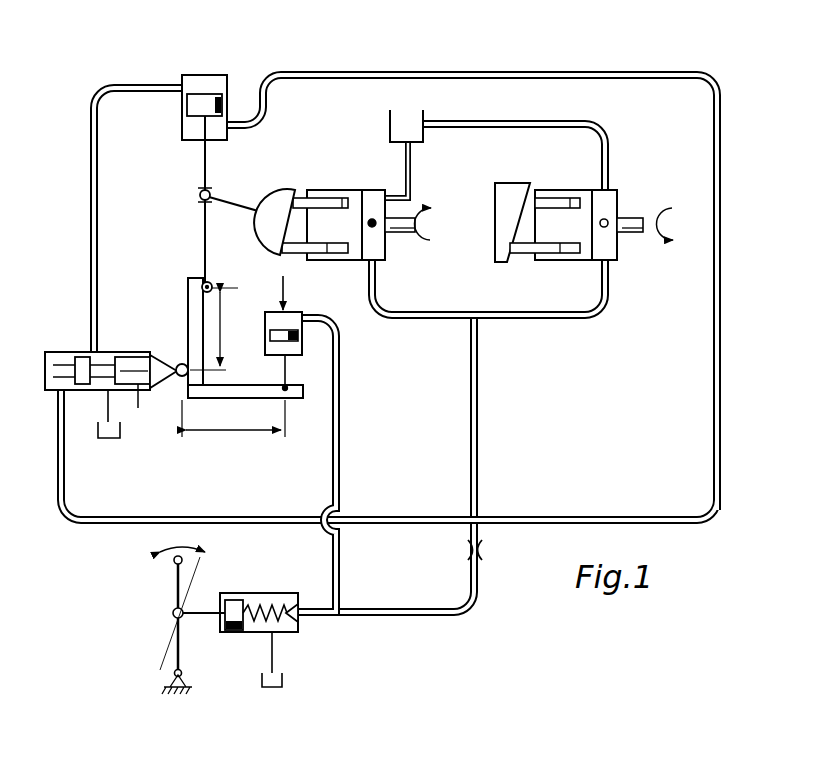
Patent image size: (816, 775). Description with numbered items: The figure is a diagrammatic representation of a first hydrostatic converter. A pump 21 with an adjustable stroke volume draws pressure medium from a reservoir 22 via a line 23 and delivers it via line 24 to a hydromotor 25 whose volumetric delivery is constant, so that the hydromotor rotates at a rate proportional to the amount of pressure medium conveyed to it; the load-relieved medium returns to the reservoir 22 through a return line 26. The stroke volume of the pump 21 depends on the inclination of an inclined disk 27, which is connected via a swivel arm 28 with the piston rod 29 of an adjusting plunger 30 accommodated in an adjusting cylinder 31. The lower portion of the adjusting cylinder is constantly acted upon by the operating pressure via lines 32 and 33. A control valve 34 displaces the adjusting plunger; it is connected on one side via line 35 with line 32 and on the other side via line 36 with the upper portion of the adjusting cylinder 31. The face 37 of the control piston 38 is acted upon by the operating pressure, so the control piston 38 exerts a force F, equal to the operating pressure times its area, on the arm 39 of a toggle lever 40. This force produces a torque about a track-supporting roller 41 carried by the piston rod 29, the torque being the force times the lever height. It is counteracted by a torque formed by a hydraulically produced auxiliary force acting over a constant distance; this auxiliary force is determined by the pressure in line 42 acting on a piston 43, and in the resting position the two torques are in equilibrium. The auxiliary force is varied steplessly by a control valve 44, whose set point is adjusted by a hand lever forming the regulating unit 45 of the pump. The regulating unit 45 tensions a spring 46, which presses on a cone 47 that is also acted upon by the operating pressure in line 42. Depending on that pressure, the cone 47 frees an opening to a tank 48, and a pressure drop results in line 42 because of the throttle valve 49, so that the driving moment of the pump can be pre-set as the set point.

The pump 21 is at (328, 190).
The reservoir 22 is at (418, 118).
The line 23 is at (412, 178).
The line 24 is at (385, 306).
The hydromotor 25 is at (553, 262).
The return line 26 is at (598, 128).
The inclined disk 27 is at (284, 190).
The swivel arm 28 is at (228, 200).
The piston rod 29 is at (205, 228).
The adjusting plunger 30 is at (230, 98).
The adjusting cylinder 31 is at (196, 75).
The line 32 is at (478, 425).
The line 33 is at (512, 68).
The control valve 34 is at (66, 352).
The line 35 is at (133, 522).
The line 36 is at (88, 200).
The face 37 is at (77, 378).
The control piston 38 is at (127, 356).
The arm 39 is at (188, 332).
The toggle lever 40 is at (206, 386).
The track-supporting roller 41 is at (211, 283).
The line 42 is at (340, 428).
The piston 43 is at (300, 333).
The control valve 44 is at (265, 593).
The regulating unit 45 is at (176, 572).
The spring 46 is at (265, 626).
The cone 47 is at (291, 632).
The tank 48 is at (281, 683).
The throttle valve 49 is at (497, 548).